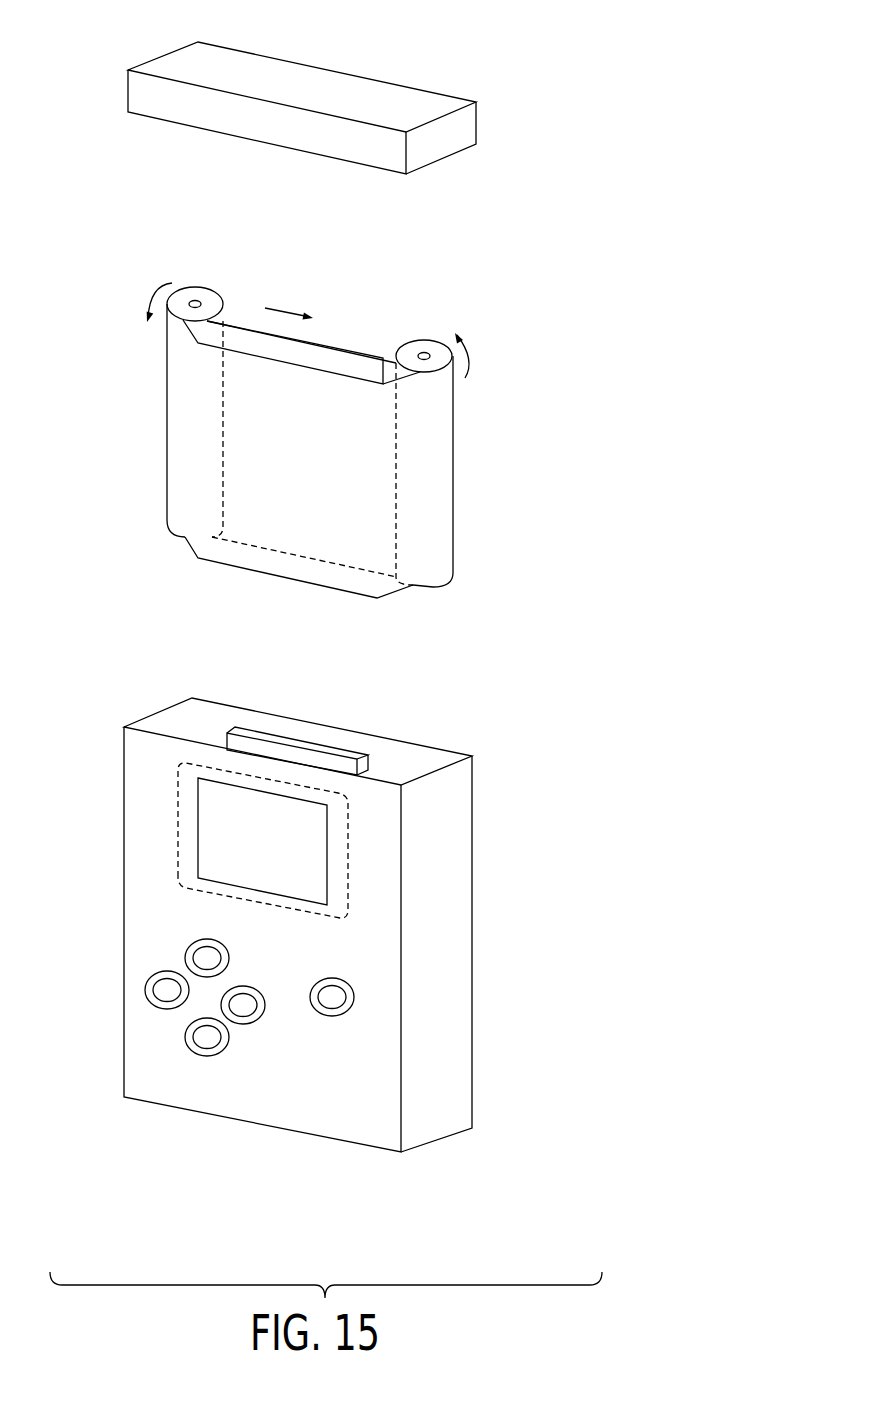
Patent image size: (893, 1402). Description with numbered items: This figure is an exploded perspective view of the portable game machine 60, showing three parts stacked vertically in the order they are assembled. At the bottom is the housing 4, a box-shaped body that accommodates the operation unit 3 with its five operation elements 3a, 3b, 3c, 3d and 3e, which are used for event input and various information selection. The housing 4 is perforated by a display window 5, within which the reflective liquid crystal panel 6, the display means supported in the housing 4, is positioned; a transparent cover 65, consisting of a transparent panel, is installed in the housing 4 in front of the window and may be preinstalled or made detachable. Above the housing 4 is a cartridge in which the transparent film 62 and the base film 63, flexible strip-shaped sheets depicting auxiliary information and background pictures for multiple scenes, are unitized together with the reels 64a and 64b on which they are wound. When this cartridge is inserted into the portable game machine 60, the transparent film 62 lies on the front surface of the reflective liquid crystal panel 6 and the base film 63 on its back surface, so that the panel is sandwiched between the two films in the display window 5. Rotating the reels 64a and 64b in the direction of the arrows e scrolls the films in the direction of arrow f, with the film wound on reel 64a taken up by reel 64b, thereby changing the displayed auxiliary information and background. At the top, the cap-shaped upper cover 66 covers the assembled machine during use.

The portable game machine 60 is at (552, 62).
The upper cover 66 is at (443, 107).
The reel 64a is at (197, 295).
The reel 64b is at (432, 347).
The base film 63 is at (343, 345).
The transparent film 62 is at (348, 380).
The reflective liquid crystal panel 6 is at (228, 732).
The display window 5 is at (327, 852).
The transparent cover 65 is at (178, 841).
The housing 4 is at (452, 997).
The operation unit 3 is at (256, 1026).
The operation element 3a is at (338, 1007).
The operation element 3b is at (213, 963).
The operation element 3c is at (198, 1040).
The operation element 3d is at (248, 1012).
The operation element 3e is at (165, 982).